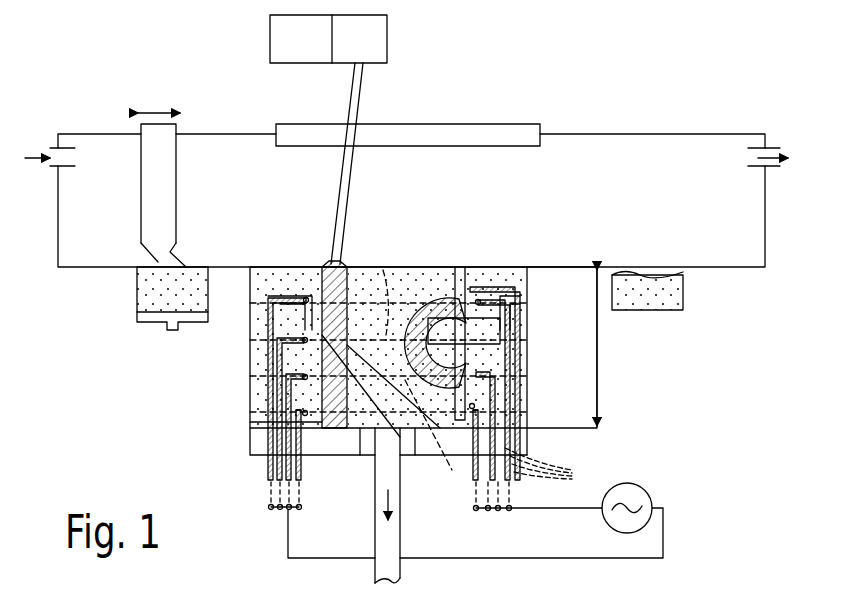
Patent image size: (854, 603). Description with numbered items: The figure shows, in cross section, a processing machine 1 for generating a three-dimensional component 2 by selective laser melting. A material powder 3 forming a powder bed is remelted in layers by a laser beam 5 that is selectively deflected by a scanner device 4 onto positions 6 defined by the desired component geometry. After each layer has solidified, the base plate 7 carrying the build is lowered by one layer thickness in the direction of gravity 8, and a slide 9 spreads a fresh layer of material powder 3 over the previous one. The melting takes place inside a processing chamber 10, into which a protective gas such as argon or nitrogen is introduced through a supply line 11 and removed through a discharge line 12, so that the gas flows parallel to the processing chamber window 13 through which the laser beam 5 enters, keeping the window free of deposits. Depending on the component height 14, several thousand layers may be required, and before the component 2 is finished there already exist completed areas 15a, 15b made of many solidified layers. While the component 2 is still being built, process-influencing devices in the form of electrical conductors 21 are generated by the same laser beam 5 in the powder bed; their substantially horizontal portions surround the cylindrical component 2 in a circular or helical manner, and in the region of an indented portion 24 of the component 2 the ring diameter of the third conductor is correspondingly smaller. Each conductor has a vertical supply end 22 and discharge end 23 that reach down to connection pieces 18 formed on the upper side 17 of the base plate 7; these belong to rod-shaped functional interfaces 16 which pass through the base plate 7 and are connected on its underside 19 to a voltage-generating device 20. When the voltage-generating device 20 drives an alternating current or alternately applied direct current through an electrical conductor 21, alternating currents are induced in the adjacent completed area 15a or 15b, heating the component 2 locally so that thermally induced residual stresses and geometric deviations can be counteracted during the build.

The processing machine 1 is at (94, 42).
The three-dimensional component 2 is at (452, 290).
The material powder 3 is at (272, 292).
The scanner device 4 is at (376, 40).
The laser beam 5 is at (358, 85).
The positions 6 is at (318, 256).
The base plate 7 is at (258, 448).
The direction of gravity 8 is at (398, 508).
The slide 9 is at (140, 133).
The processing chamber 10 is at (662, 178).
The supply line 11 is at (50, 150).
The discharge line 12 is at (770, 150).
The processing chamber window 13 is at (503, 134).
The component height 14 is at (640, 348).
The completed area 15a is at (366, 438).
The completed area 15b is at (424, 462).
The functional interfaces 16 is at (538, 479).
The upper side 17 is at (262, 420).
The connection pieces 18 is at (262, 428).
The underside 19 is at (260, 468).
The voltage-generating device 20 is at (634, 492).
The electrical conductors 21 is at (382, 268).
The supply end 22 is at (275, 410).
The discharge end 23 is at (480, 415).
The indented portion 24 is at (502, 331).